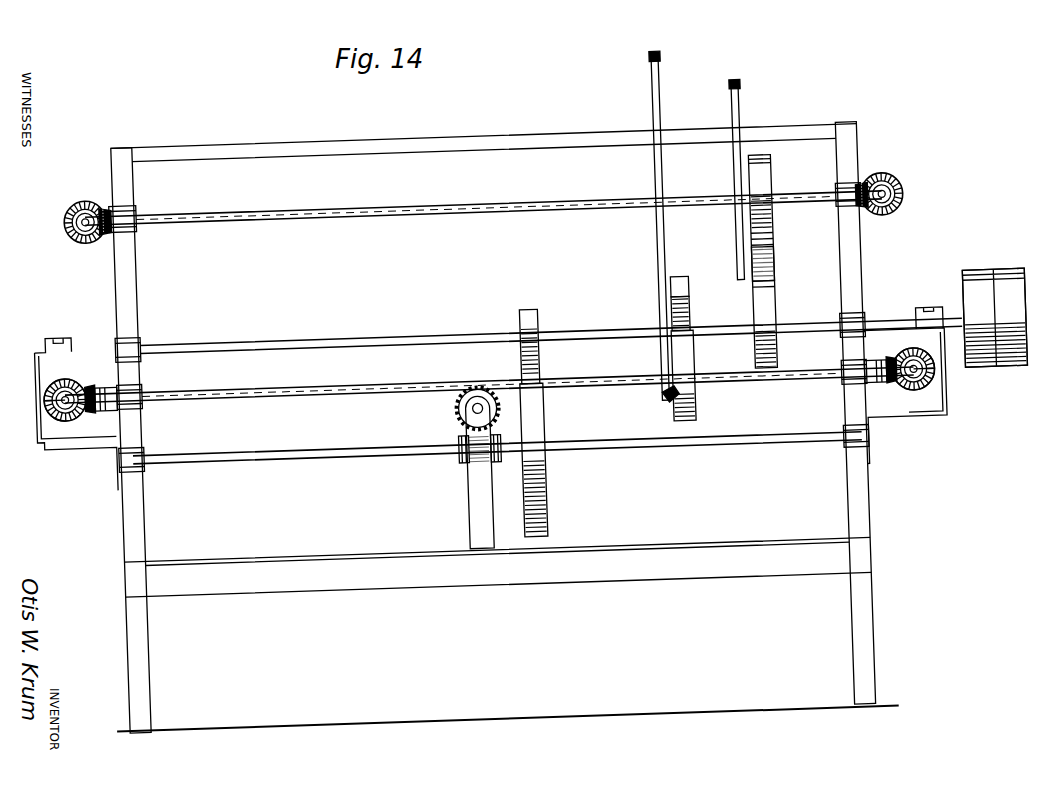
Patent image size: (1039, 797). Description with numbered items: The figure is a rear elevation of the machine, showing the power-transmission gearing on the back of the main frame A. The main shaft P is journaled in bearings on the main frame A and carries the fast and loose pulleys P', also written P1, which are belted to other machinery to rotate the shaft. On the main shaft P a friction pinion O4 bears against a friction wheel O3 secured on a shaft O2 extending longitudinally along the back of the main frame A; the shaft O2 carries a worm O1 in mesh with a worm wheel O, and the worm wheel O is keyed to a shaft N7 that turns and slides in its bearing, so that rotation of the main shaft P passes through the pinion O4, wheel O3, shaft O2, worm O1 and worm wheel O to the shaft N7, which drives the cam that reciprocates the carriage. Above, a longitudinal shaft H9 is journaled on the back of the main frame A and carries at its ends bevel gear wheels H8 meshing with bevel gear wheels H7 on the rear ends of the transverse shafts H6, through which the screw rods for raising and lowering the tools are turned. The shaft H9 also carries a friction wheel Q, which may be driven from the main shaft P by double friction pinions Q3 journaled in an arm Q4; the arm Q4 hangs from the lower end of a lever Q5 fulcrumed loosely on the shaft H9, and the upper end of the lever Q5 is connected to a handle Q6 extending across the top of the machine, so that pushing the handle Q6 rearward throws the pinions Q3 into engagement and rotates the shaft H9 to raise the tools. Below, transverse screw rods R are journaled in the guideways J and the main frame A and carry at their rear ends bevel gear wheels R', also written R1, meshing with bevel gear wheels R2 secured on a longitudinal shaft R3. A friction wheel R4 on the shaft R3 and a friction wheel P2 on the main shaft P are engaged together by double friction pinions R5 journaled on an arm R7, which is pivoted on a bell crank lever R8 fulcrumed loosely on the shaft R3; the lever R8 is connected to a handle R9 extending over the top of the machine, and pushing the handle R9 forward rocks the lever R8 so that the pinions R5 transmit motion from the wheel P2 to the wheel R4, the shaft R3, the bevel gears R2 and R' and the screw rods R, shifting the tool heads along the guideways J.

The main frame A is at (845, 517).
The transversely extending shafts H6 is at (85, 222).
The bevel gear wheels H7 is at (80, 232).
The bevel gear wheels H8 is at (110, 206).
The longitudinally extending shaft H9 is at (502, 205).
The guideways J is at (58, 340).
The main shaft P is at (538, 320).
The fast and loose pulleys P' is at (994, 301).
The fast and loose pulleys P1 is at (994, 301).
The friction wheel P2 is at (682, 282).
The transverse screw rods R is at (492, 399).
The bevel gear wheels R' is at (472, 367).
The bevel gear wheels R1 is at (472, 367).
The bevel gear wheels R2 is at (88, 386).
The shaft R3 is at (600, 378).
The friction wheel R4 is at (695, 407).
The double friction pinions R5 is at (692, 305).
The arm R7 is at (672, 395).
The bell crank lever R8 is at (660, 228).
The handle R9 is at (648, 60).
The worm wheel O is at (456, 408).
The worm O1 is at (460, 464).
The shaft O2 is at (381, 453).
The friction wheel O3 is at (547, 497).
The friction pinion O4 is at (540, 312).
The shaft N7 is at (466, 420).
The friction wheel Q is at (768, 212).
The double friction pinions Q3 is at (757, 265).
The arm Q4 is at (746, 262).
The lever Q5 is at (738, 163).
The handle Q6 is at (730, 90).